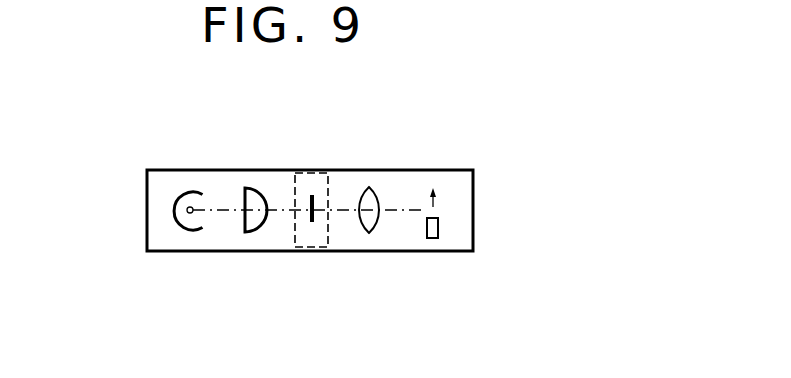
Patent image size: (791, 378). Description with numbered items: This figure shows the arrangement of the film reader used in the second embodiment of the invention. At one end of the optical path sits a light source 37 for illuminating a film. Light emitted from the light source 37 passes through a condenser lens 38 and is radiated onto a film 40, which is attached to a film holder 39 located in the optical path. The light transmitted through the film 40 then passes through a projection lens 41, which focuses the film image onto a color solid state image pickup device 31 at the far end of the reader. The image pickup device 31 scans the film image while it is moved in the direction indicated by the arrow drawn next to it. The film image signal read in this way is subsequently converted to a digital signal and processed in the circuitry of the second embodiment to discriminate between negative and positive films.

The color solid state image pickup device 31 is at (433, 240).
The light source 37 is at (187, 208).
The collimating lens 38 is at (250, 189).
The film holder 39 is at (315, 173).
The film 40 is at (314, 223).
The projection lens 41 is at (369, 190).